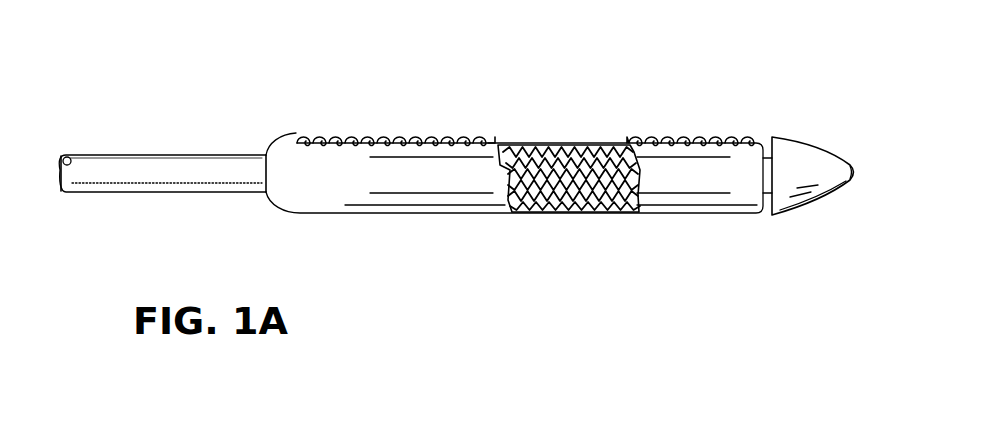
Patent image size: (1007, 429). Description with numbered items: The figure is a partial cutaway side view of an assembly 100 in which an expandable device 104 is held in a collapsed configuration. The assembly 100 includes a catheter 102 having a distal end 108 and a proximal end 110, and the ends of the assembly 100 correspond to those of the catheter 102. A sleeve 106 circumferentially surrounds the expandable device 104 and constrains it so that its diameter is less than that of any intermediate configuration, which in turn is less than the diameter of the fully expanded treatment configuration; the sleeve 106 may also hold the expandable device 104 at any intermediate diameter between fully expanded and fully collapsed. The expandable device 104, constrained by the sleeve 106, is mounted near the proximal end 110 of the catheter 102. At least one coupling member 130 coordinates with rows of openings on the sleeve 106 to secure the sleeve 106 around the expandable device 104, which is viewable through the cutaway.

The assembly 100 is at (679, 81).
The catheter 102 is at (233, 188).
The expandable device 104 is at (565, 143).
The sleeve 106 is at (286, 150).
The distal end 108 is at (69, 205).
The proximal end 110 is at (855, 205).
The coupling member 130 is at (392, 131).